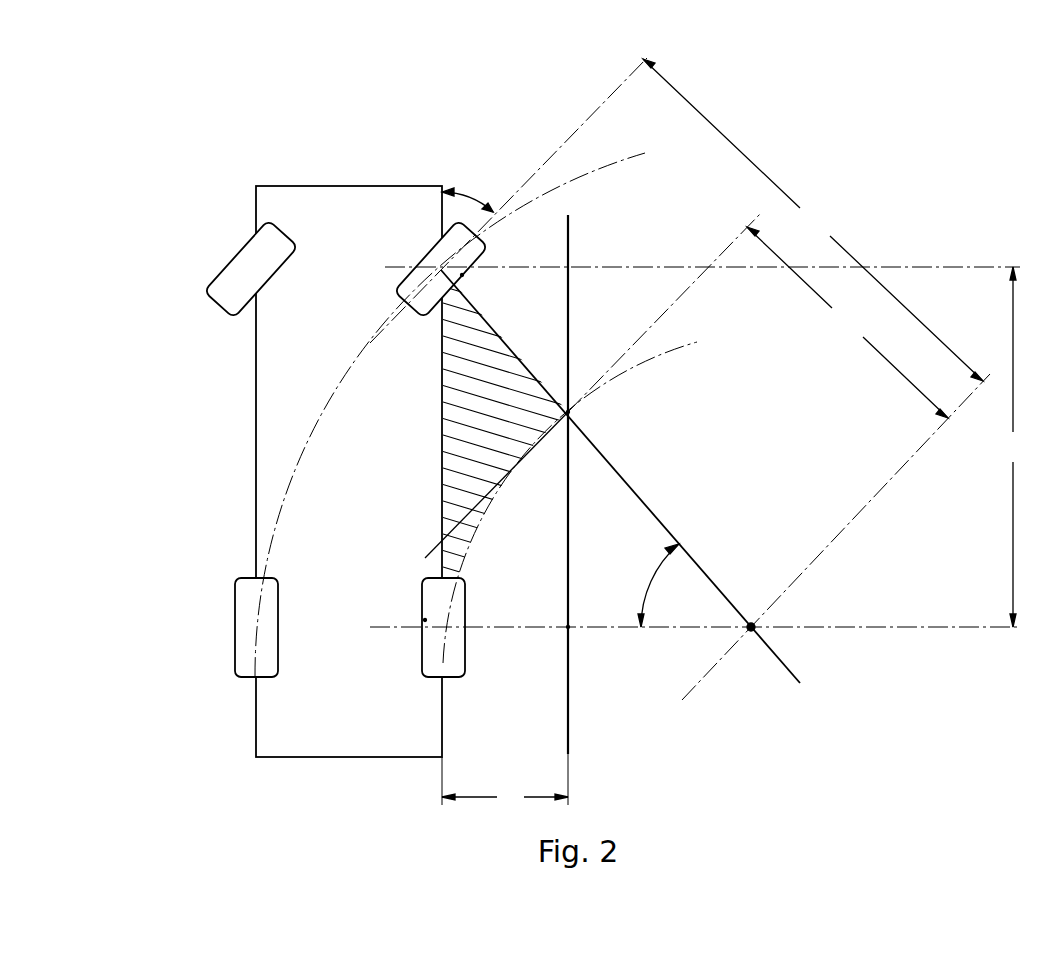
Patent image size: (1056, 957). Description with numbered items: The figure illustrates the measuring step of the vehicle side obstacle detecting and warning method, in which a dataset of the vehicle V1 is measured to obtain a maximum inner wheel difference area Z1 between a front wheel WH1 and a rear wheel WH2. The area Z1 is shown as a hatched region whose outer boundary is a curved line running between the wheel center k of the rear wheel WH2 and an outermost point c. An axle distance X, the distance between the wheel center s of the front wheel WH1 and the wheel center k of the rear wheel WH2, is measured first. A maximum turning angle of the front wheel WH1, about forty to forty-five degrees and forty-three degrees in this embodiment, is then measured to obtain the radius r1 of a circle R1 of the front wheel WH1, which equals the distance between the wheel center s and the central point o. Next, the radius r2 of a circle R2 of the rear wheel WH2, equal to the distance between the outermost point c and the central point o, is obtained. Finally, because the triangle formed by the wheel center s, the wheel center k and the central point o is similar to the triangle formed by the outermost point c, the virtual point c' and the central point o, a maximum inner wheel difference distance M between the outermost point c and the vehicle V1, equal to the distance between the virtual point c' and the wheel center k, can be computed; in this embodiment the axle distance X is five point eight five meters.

The vehicle V1 is at (287, 186).
The front wheel WH1 is at (430, 257).
The rear wheel WH2 is at (425, 657).
The maximum inner wheel difference area Z1 is at (503, 336).
The circle of the front wheel R1 is at (470, 407).
The circle of the rear wheel R2 is at (591, 495).
The radius of the circle of the front wheel r1 is at (813, 220).
The radius of the circle of the rear wheel r2 is at (847, 322).
The axle distance X is at (1013, 447).
The maximum inner wheel difference distance M is at (505, 781).
The central point o is at (753, 611).
The outermost point c is at (582, 413).
The virtual point c' is at (581, 643).
The wheel center of the front wheel s is at (474, 285).
The wheel center of the rear wheel k is at (410, 607).